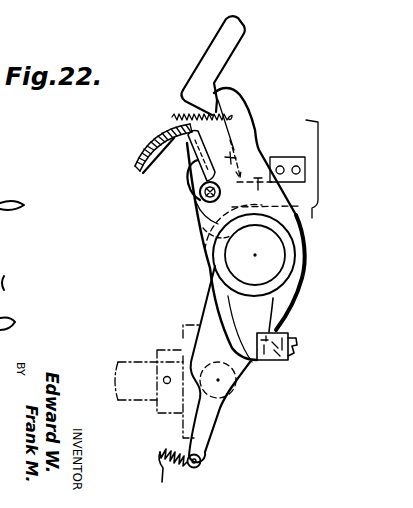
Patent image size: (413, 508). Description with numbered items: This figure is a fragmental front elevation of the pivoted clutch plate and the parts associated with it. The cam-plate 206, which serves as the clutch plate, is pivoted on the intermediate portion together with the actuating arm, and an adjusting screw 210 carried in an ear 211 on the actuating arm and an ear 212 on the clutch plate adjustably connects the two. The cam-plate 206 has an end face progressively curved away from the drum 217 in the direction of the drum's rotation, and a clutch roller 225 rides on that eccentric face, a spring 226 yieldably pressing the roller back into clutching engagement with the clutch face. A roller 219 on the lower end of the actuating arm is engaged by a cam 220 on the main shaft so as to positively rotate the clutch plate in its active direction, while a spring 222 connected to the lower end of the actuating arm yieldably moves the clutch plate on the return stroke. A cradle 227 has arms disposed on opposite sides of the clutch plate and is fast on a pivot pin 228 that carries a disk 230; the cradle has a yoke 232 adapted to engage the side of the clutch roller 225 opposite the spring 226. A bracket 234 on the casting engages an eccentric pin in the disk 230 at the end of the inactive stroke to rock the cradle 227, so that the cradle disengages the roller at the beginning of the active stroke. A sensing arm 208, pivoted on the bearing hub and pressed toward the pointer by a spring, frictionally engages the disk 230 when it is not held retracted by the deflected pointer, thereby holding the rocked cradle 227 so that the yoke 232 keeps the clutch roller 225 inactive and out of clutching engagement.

The cam-plate 206 is at (257, 150).
The sensing arm 208 is at (234, 47).
The adjusting screw 210 is at (297, 358).
The ear 211 is at (274, 330).
The ear 212 is at (298, 339).
The drum 217 is at (153, 147).
The roller 219 is at (226, 394).
The cam 220 is at (183, 339).
The spring 222 is at (179, 475).
The clutch roller 225 is at (177, 175).
The spring 226 is at (186, 182).
The cradle 227 is at (198, 196).
The pivot pin 228 is at (196, 218).
The disk 230 is at (202, 236).
The yoke 232 is at (255, 149).
The bracket 234 is at (270, 157).